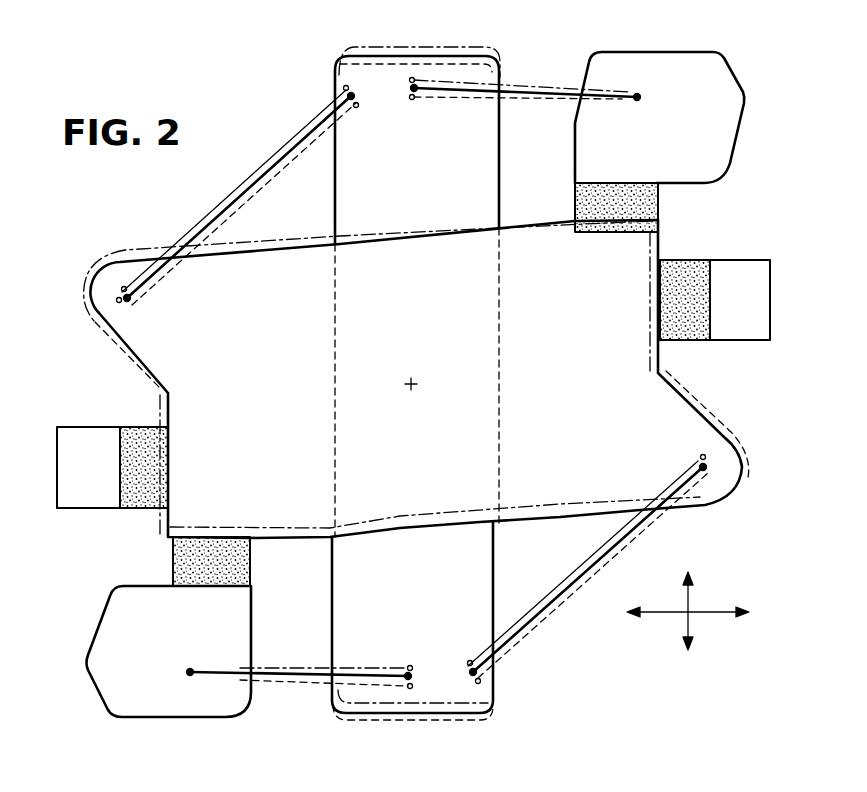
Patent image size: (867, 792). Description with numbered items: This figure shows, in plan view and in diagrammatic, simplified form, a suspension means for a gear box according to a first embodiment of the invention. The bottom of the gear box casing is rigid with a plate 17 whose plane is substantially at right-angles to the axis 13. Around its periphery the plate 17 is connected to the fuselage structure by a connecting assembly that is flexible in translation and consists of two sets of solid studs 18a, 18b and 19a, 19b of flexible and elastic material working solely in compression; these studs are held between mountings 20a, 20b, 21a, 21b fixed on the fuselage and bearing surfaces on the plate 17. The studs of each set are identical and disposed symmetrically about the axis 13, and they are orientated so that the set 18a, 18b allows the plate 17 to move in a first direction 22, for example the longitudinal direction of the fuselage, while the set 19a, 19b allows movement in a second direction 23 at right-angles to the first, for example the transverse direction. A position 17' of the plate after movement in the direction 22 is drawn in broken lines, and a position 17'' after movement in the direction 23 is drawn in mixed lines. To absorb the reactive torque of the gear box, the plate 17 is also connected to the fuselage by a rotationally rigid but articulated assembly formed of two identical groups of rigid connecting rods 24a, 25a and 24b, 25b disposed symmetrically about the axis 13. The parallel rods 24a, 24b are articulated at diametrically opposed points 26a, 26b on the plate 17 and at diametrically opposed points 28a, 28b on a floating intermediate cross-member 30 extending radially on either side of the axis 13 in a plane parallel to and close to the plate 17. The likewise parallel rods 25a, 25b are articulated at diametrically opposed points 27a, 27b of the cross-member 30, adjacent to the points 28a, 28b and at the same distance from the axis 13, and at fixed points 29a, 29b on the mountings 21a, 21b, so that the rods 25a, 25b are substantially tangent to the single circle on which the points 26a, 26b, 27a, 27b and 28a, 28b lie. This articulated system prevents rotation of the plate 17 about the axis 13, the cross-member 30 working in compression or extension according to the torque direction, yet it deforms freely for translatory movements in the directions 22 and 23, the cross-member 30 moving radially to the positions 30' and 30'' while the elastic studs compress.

The axis 13 is at (412, 384).
The plate 17 is at (416, 379).
The position of the plate after movement in the first direction 17' is at (395, 364).
The position of the plate after movement in the second direction 17'' is at (382, 225).
The solid stud of flexible and elastic material 18a is at (150, 508).
The solid stud of flexible and elastic material 18b is at (683, 260).
The solid stud of flexible and elastic material 19a is at (173, 563).
The solid stud of flexible and elastic material 19b is at (658, 205).
The mounting 20a is at (80, 427).
The mounting 20b is at (722, 342).
The mounting 21a is at (105, 613).
The mounting 21b is at (727, 63).
The first direction 22 is at (700, 625).
The second direction 23 is at (700, 585).
The connecting rod 24a is at (594, 566).
The connecting rod 24b is at (212, 222).
The connecting rod 25a is at (322, 674).
The connecting rod 25b is at (520, 92).
The articulation point on the plate 26a is at (707, 467).
The articulation point on the plate 26b is at (130, 300).
The articulation point on the cross-member 27a is at (412, 677).
The articulation point on the cross-member 27b is at (413, 86).
The articulation point on the cross-member 28a is at (468, 673).
The articulation point on the cross-member 28b is at (352, 90).
The fixed point on the mounting 29a is at (190, 672).
The fixed point on the mounting 29b is at (640, 97).
The floating intermediate cross-member 30 is at (417, 150).
The position of the cross-member 30' is at (420, 43).
The position of the cross-member 30'' is at (448, 47).